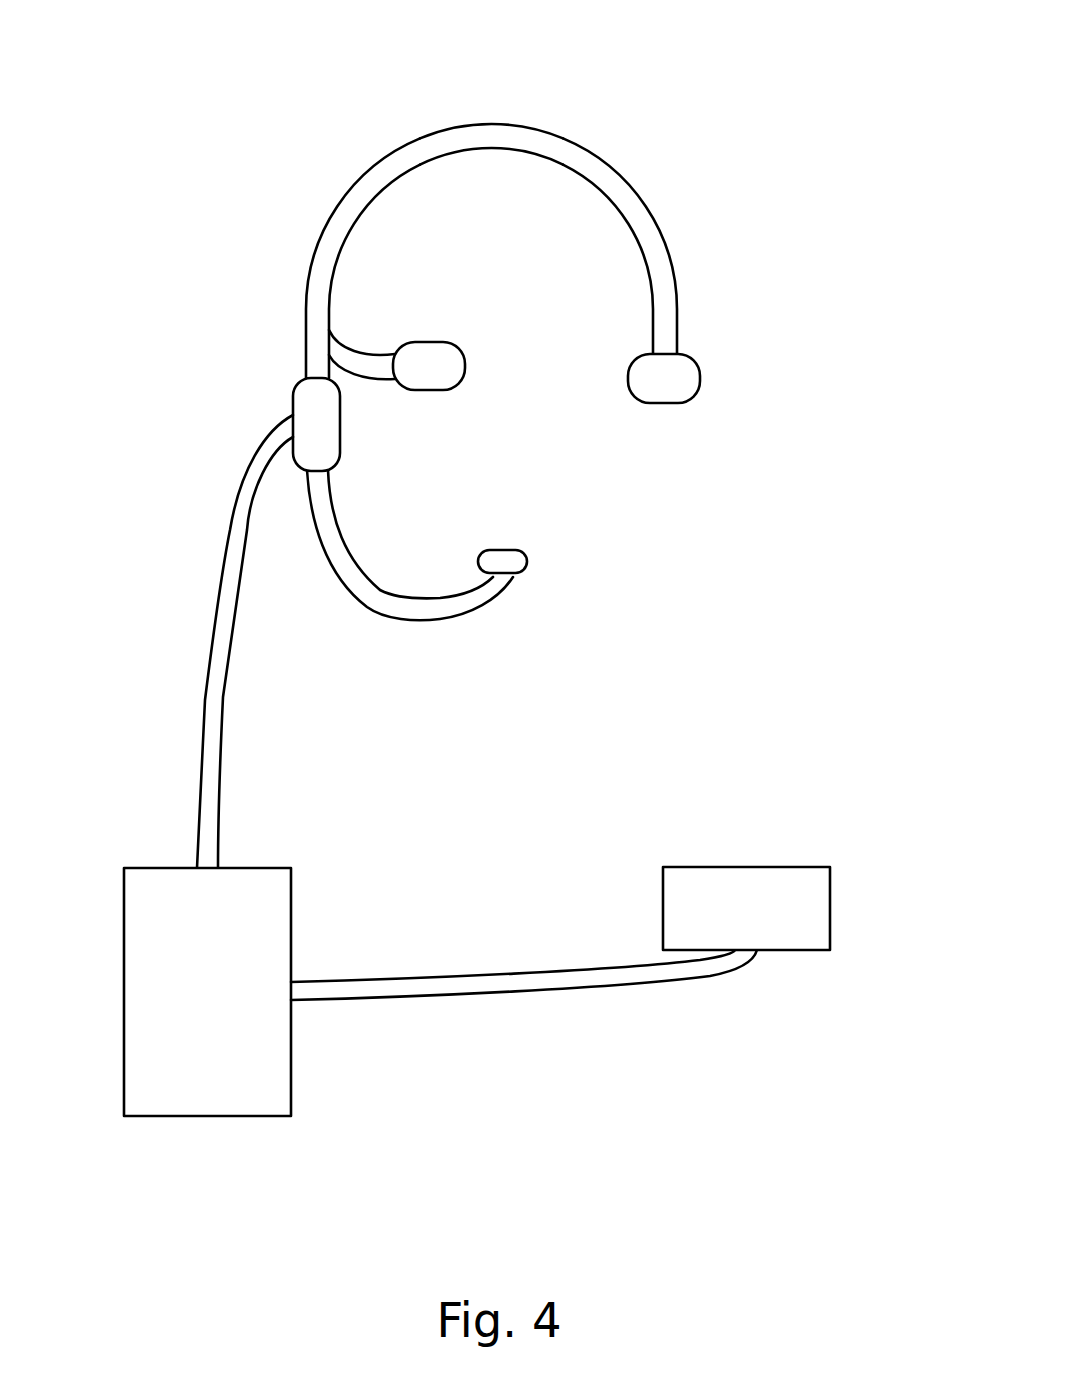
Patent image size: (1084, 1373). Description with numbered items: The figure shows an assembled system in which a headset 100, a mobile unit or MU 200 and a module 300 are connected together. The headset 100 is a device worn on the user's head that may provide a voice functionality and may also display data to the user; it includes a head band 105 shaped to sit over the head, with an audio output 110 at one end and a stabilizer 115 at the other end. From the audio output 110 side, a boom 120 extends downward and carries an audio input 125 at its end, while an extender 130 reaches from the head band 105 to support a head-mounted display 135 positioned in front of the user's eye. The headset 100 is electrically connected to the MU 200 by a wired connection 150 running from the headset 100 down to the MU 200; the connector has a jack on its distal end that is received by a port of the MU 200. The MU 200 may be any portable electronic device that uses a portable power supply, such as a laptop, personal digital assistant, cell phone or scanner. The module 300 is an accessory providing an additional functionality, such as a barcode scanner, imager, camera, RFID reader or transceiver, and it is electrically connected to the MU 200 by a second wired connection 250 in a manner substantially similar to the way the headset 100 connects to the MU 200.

The headset 100 is at (332, 167).
The head band 105 is at (495, 123).
The audio output 110 is at (293, 398).
The stabilizer 115 is at (666, 403).
The boom 120 is at (414, 621).
The audio input 125 is at (528, 563).
The extender 130 is at (373, 352).
The head-mounted display 135 is at (467, 367).
The cable 150 is at (210, 642).
The MU 200 is at (167, 1157).
The cable 250 is at (498, 994).
The module 300 is at (850, 847).